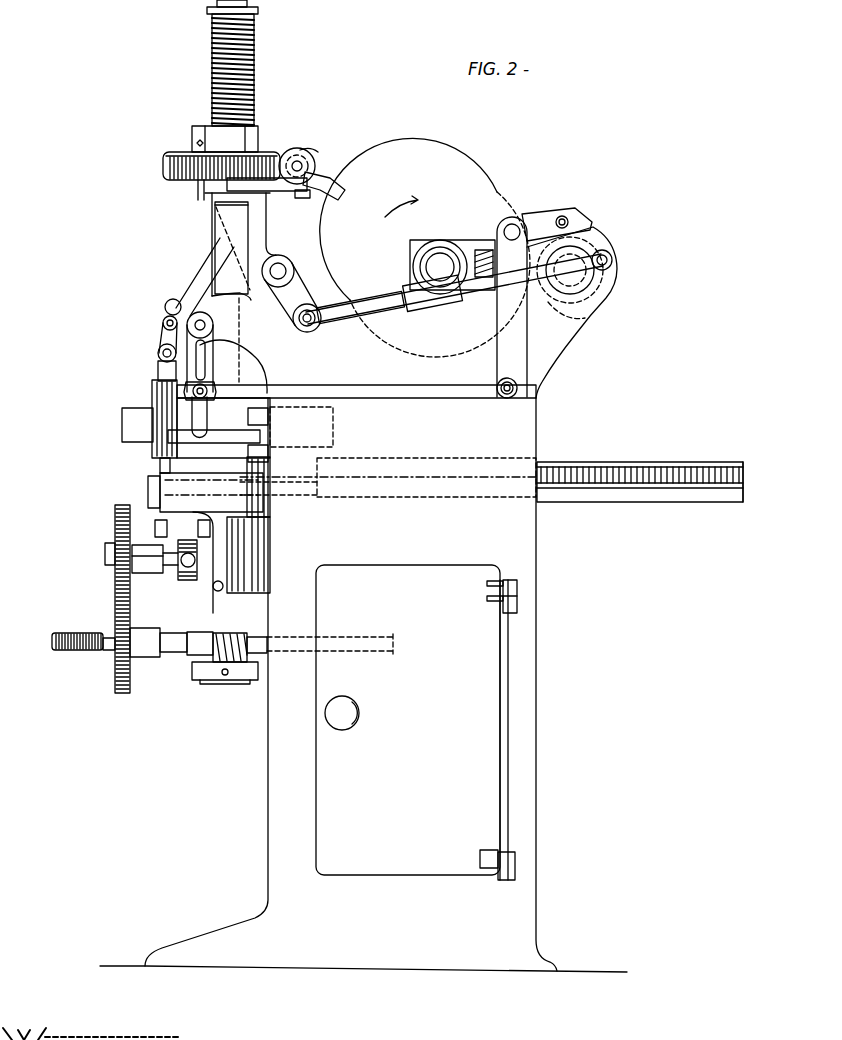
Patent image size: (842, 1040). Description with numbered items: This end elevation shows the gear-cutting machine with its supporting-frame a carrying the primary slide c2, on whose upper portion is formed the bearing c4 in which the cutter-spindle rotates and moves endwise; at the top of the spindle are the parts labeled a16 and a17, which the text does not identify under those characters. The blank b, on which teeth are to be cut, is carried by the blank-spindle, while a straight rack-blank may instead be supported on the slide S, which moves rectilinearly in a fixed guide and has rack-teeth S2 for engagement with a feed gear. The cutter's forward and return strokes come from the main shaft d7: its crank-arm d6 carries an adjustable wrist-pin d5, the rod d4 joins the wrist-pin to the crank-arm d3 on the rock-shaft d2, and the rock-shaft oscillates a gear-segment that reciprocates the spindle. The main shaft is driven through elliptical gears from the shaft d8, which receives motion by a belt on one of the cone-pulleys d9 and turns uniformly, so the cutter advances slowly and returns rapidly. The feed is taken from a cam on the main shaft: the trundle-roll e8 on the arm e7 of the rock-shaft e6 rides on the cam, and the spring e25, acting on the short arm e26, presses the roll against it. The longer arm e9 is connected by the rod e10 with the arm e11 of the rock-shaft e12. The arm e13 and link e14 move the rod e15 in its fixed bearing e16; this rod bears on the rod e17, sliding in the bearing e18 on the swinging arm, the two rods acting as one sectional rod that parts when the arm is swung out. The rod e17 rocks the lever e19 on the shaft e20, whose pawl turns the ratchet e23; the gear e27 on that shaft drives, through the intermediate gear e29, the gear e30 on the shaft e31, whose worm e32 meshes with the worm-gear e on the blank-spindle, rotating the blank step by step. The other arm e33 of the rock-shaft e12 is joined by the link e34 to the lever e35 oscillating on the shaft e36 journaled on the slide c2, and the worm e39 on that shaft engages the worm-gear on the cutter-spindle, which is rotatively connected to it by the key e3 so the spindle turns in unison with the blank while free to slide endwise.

The supporting-frame a is at (363, 685).
The threaded spindle a16 is at (254, 86).
The spindle nut a17 is at (258, 12).
The blank b is at (123, 441).
The primary slide c2 is at (258, 222).
The bearing c4 is at (195, 182).
The rock-shaft d2 is at (290, 270).
The crank-arm d3 is at (300, 298).
The rod d4 is at (368, 326).
The wrist-pin d5 is at (612, 260).
The crank-arm d6 is at (603, 240).
The main shaft d7 is at (583, 229).
The shaft d8 is at (426, 268).
The cone-pulleys d9 is at (430, 172).
The worm-gear e is at (52, 641).
The key e3 is at (590, 227).
The rock-shaft e6 is at (513, 226).
The arm e7 is at (538, 221).
The trundle-roll e8 is at (564, 217).
The longer arm e9 is at (512, 347).
The rod e10 is at (389, 395).
The arm e11 is at (208, 363).
The rock-shaft e12 is at (203, 320).
The arm e13 is at (162, 326).
The link e14 is at (158, 354).
The rod e15 is at (158, 372).
The fixed bearing e16 is at (152, 420).
The rod e17 is at (160, 462).
The bearing e18 is at (150, 505).
The lever e19 is at (213, 587).
The shaft e20 is at (106, 561).
The ratchet e23 is at (182, 584).
The spring e25 is at (456, 240).
The short arm e26 is at (487, 236).
The gear e27 is at (115, 578).
The intermediate gear e29 is at (115, 516).
The gear e30 is at (116, 684).
The shaft e31 is at (176, 656).
The worm e32 is at (236, 670).
The arm e33 is at (180, 299).
The link e34 is at (207, 250).
The lever e35 is at (288, 158).
The shaft e36 is at (313, 168).
The worm e39 is at (303, 152).
The slide S is at (640, 474).
The rack-teeth S2 is at (743, 480).